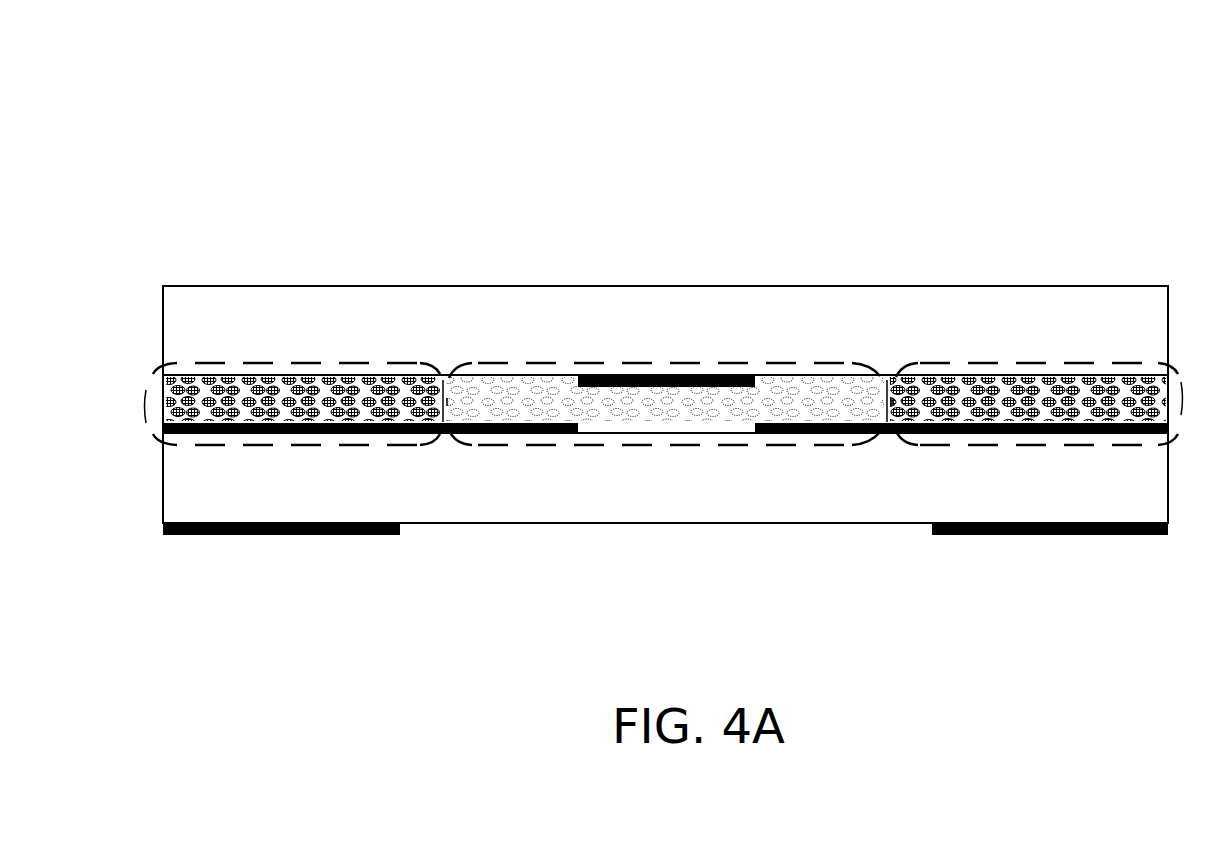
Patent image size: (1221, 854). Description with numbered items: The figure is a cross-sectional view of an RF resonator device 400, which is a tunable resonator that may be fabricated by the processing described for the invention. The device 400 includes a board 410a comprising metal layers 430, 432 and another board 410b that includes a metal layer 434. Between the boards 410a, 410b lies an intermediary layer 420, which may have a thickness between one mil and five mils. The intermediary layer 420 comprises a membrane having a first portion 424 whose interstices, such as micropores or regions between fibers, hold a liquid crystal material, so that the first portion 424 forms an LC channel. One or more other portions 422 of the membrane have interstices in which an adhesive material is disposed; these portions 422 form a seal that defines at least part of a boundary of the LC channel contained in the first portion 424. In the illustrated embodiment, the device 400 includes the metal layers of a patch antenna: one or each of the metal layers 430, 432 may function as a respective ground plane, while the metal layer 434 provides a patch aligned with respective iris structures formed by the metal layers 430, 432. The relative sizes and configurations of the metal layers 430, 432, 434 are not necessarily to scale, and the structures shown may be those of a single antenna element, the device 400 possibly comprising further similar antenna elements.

The RF resonator device 400 is at (288, 98).
The board 410a is at (1158, 504).
The board 410b is at (1158, 341).
The intermediary layer 420 is at (135, 375).
The portions of the membrane 422 is at (306, 363).
The first portion of the membrane 424 is at (557, 363).
The metal layer 430 is at (360, 538).
The metal layer 432 is at (391, 442).
The metal layer 434 is at (680, 372).